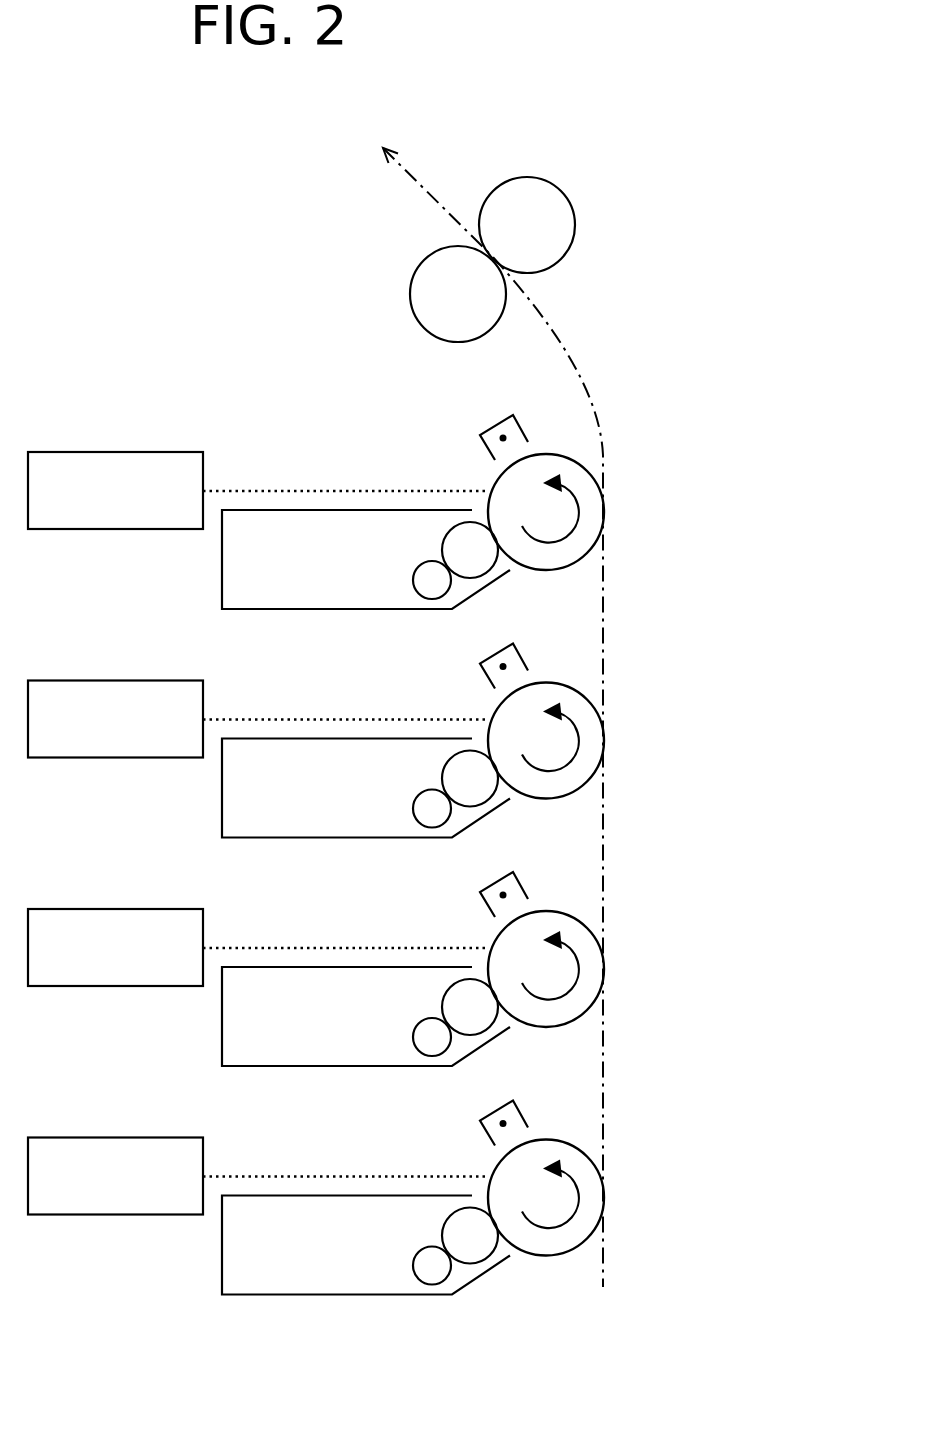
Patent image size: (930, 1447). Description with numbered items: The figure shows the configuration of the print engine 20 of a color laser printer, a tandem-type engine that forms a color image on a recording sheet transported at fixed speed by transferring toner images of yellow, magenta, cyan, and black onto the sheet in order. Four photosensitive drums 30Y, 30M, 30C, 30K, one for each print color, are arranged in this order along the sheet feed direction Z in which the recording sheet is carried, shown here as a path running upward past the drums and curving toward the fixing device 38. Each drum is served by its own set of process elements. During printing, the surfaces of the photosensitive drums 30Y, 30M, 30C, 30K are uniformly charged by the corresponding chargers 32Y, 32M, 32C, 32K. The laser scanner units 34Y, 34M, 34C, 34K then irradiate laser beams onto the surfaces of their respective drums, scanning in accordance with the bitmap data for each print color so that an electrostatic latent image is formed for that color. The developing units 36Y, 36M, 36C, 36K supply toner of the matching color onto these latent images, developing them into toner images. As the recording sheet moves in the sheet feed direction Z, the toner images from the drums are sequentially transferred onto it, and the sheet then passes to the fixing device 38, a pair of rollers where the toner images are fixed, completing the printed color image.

The print engine 20 is at (183, 331).
The fixing device 38 is at (573, 238).
The sheet feed direction Z is at (493, 717).
The photosensitive drum 30K is at (588, 552).
The photosensitive drum 30C is at (600, 756).
The photosensitive drum 30M is at (602, 984).
The photosensitive drum 30Y is at (600, 1213).
The charger 32K is at (484, 452).
The charger 32C is at (446, 666).
The charger 32M is at (446, 894).
The charger 32Y is at (446, 1123).
The laser scanner unit 34K is at (90, 529).
The laser scanner unit 34C is at (115, 753).
The laser scanner unit 34M is at (115, 981).
The laser scanner unit 34Y is at (115, 1210).
The developing unit 36K is at (282, 609).
The developing unit 36C is at (364, 814).
The developing unit 36M is at (364, 1042).
The developing unit 36Y is at (364, 1271).